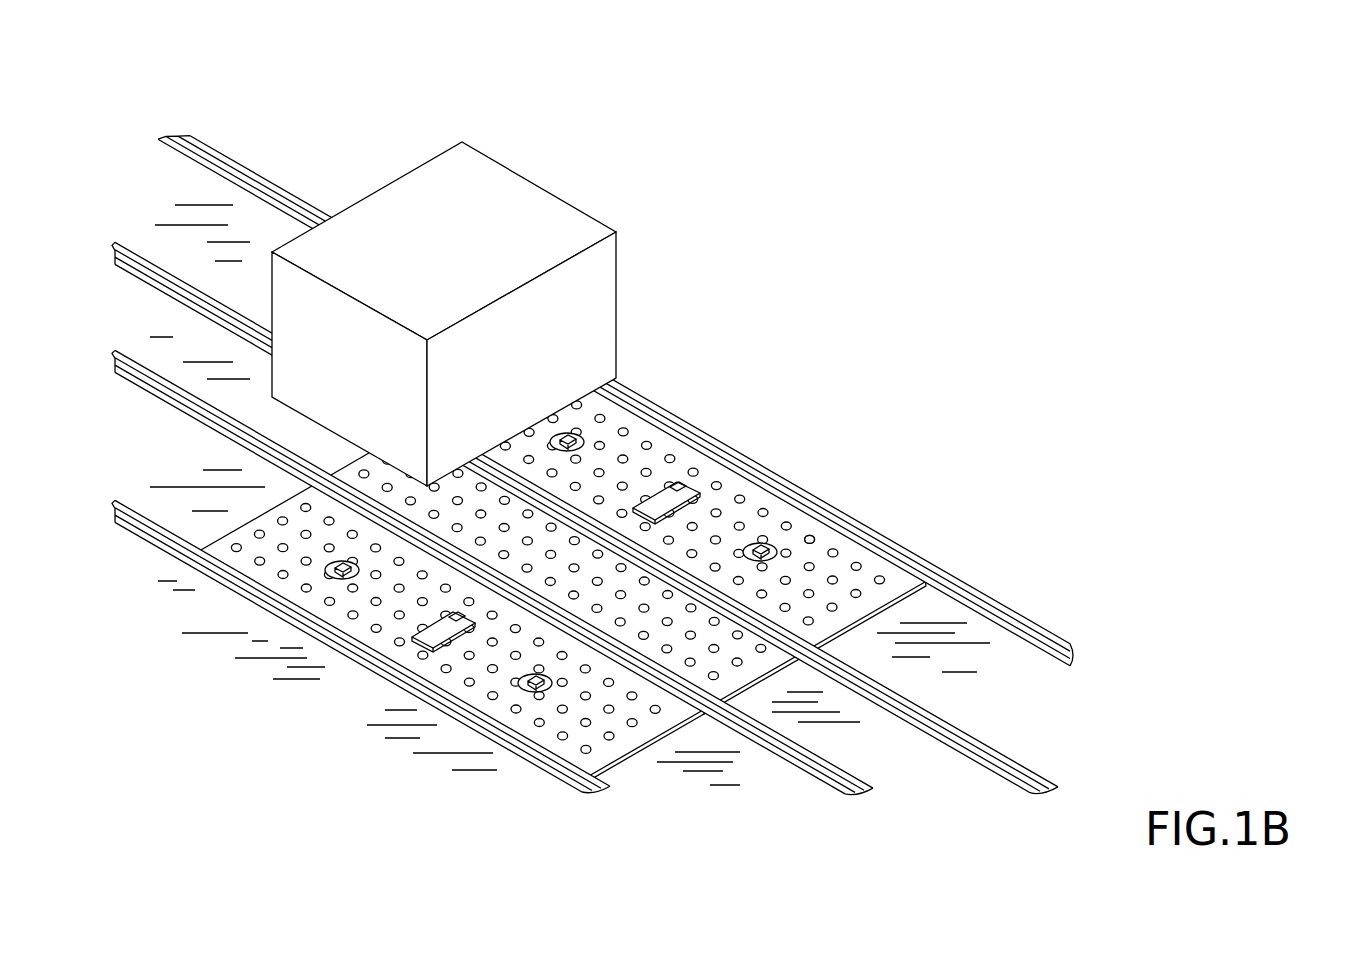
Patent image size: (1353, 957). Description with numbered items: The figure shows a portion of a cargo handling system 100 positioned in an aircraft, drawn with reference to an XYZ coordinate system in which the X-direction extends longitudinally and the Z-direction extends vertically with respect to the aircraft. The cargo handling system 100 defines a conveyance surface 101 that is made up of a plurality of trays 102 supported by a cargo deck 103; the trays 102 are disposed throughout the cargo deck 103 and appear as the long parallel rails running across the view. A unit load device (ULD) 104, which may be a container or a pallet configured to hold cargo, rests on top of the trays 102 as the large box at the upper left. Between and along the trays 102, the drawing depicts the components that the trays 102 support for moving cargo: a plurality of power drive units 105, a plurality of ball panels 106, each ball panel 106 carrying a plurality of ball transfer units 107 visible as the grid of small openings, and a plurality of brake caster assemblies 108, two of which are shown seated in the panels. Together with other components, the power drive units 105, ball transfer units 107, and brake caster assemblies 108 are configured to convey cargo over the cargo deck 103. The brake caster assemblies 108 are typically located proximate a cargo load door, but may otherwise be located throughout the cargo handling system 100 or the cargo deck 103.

The cargo handling system 100 is at (643, 437).
The conveyance surface 101 is at (643, 465).
The trays 102 is at (975, 591).
The cargo deck 103 is at (662, 795).
The unit load device (ULD) 104 is at (490, 180).
The power drive units 105 is at (672, 497).
The ball panels 106 is at (628, 544).
The ball transfer units 107 is at (808, 536).
The brake caster assemblies 108 is at (575, 437).